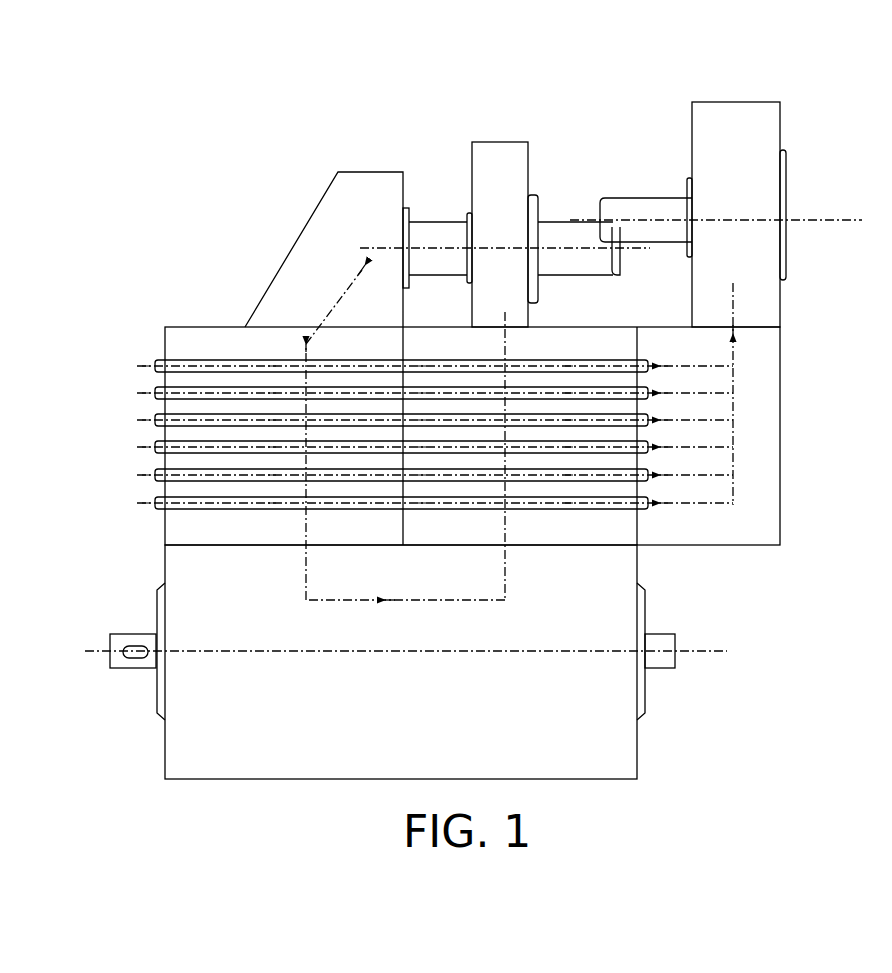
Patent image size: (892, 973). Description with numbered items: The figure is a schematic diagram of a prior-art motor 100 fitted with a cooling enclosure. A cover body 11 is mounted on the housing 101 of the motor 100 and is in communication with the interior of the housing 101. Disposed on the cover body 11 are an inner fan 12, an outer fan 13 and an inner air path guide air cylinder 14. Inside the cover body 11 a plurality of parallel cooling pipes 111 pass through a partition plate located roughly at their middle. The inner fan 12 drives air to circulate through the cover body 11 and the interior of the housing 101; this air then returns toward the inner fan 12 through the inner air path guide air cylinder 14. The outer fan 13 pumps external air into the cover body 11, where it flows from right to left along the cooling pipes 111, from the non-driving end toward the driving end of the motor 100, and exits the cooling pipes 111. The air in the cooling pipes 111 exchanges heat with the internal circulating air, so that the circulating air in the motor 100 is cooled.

The motor 100 is at (477, 116).
The cover body 11 is at (780, 430).
The cooling pipes 111 is at (630, 503).
The housing 101 is at (428, 709).
The inner air path guide air cylinder 14 is at (365, 234).
The inner fan 12 is at (516, 219).
The outer fan 13 is at (753, 184).